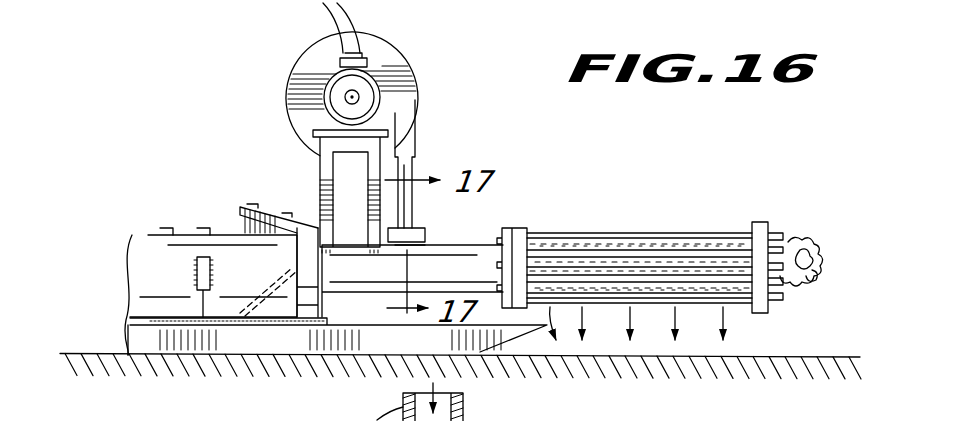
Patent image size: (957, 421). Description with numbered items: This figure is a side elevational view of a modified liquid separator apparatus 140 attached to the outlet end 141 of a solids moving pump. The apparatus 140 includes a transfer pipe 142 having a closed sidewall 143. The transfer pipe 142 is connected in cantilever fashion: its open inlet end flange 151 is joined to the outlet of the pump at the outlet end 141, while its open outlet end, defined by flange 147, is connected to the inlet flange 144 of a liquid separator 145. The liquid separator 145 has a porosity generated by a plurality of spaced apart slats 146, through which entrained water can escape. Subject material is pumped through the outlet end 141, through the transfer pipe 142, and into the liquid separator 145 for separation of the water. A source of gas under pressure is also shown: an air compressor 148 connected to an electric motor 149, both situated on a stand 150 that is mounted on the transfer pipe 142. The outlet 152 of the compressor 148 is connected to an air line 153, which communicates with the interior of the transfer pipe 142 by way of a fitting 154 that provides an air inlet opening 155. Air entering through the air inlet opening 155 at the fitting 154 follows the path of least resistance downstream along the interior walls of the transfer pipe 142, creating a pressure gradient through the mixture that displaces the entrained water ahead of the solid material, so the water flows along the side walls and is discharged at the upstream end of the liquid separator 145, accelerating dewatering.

The liquid separator apparatus 140 is at (639, 214).
The outlet end of solids moving pump 141 is at (185, 265).
The transfer pipe 142 is at (550, 207).
The closed sidewall 143 is at (378, 323).
The inlet flange 144 is at (644, 244).
The liquid separator 145 is at (663, 238).
The spaced apart slats 146 is at (785, 232).
The outlet end flange 147 is at (638, 223).
The air compressor 148 is at (399, 77).
The electric motor 149 is at (289, 81).
The stand 150 is at (307, 186).
The inlet end flange 151 is at (337, 365).
The compressor outlet 152 is at (452, 151).
The air line 153 is at (473, 263).
The fitting 154 is at (444, 222).
The air inlet opening 155 is at (596, 408).